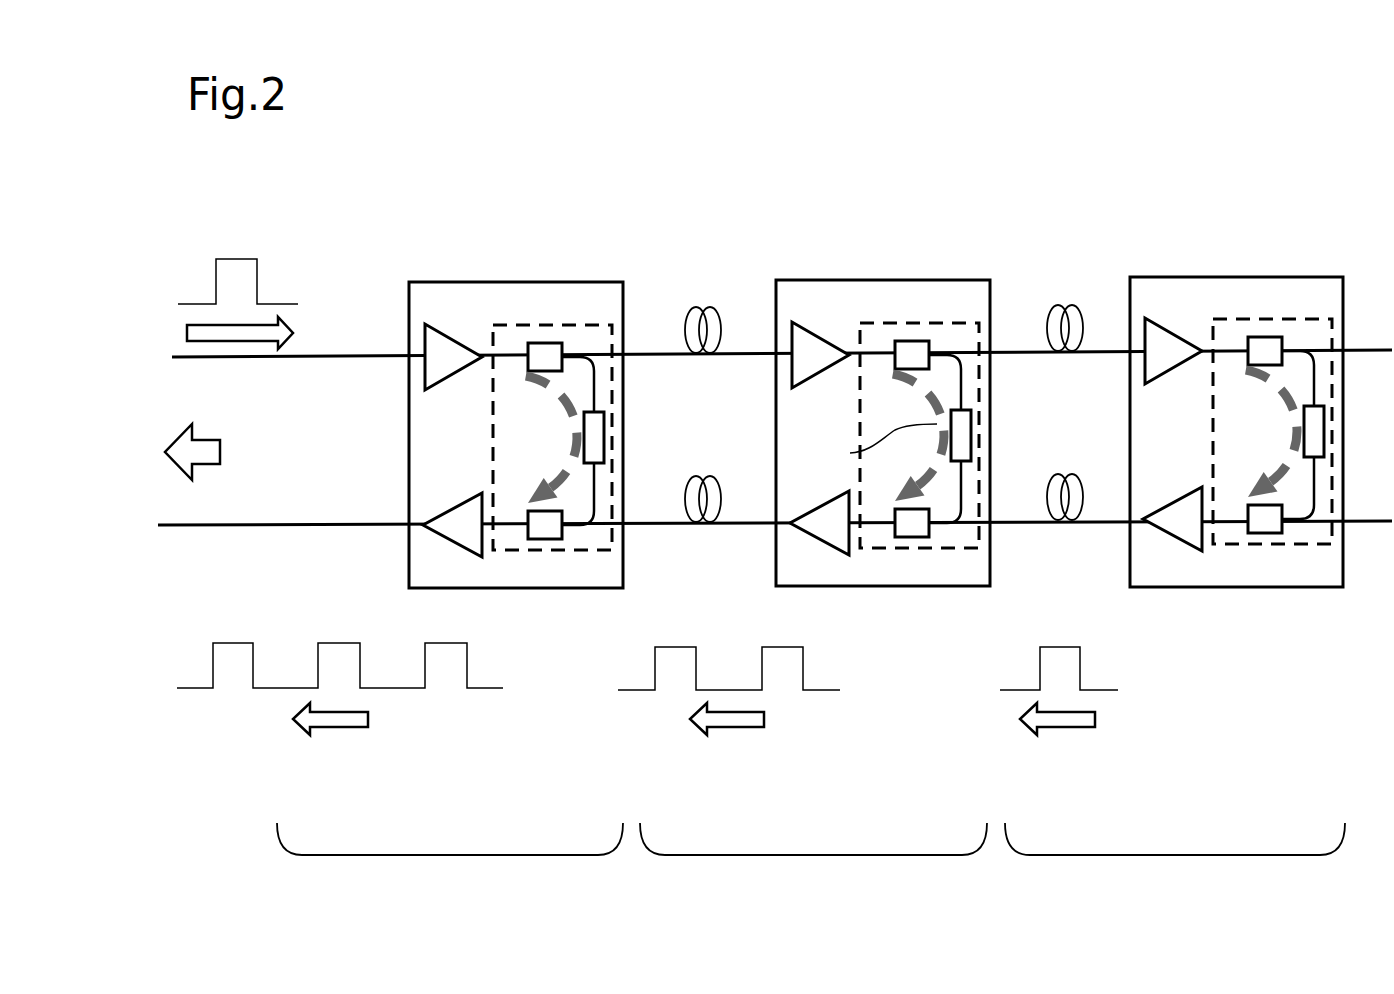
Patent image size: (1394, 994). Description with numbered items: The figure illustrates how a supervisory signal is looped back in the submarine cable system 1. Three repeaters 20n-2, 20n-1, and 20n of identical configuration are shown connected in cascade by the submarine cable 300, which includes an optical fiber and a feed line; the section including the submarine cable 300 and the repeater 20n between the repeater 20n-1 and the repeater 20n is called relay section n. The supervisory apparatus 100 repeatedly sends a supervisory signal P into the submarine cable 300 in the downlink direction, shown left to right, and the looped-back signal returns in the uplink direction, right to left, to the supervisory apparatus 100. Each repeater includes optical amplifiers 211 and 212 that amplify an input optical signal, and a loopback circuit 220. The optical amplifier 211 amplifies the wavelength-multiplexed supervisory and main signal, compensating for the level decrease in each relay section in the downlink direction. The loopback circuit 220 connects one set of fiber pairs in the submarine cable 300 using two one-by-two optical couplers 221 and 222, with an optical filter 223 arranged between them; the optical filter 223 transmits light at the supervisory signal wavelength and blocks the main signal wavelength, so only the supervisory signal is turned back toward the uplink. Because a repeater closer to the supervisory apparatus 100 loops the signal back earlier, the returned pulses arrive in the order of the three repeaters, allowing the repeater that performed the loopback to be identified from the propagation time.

The submarine cable system 1 is at (750, 80).
The submarine cable 300 is at (353, 355).
The supervisory apparatus 100 is at (282, 466).
The repeater 20n-2 is at (518, 282).
The repeater 20n-1 is at (917, 280).
The repeater 20n is at (1272, 230).
The optical amplifier 211 is at (819, 330).
The optical amplifier 212 is at (820, 545).
The loopback circuit 220 is at (967, 322).
The optical coupler 221 is at (908, 340).
The optical coupler 222 is at (908, 540).
The optical filter 223 is at (972, 424).